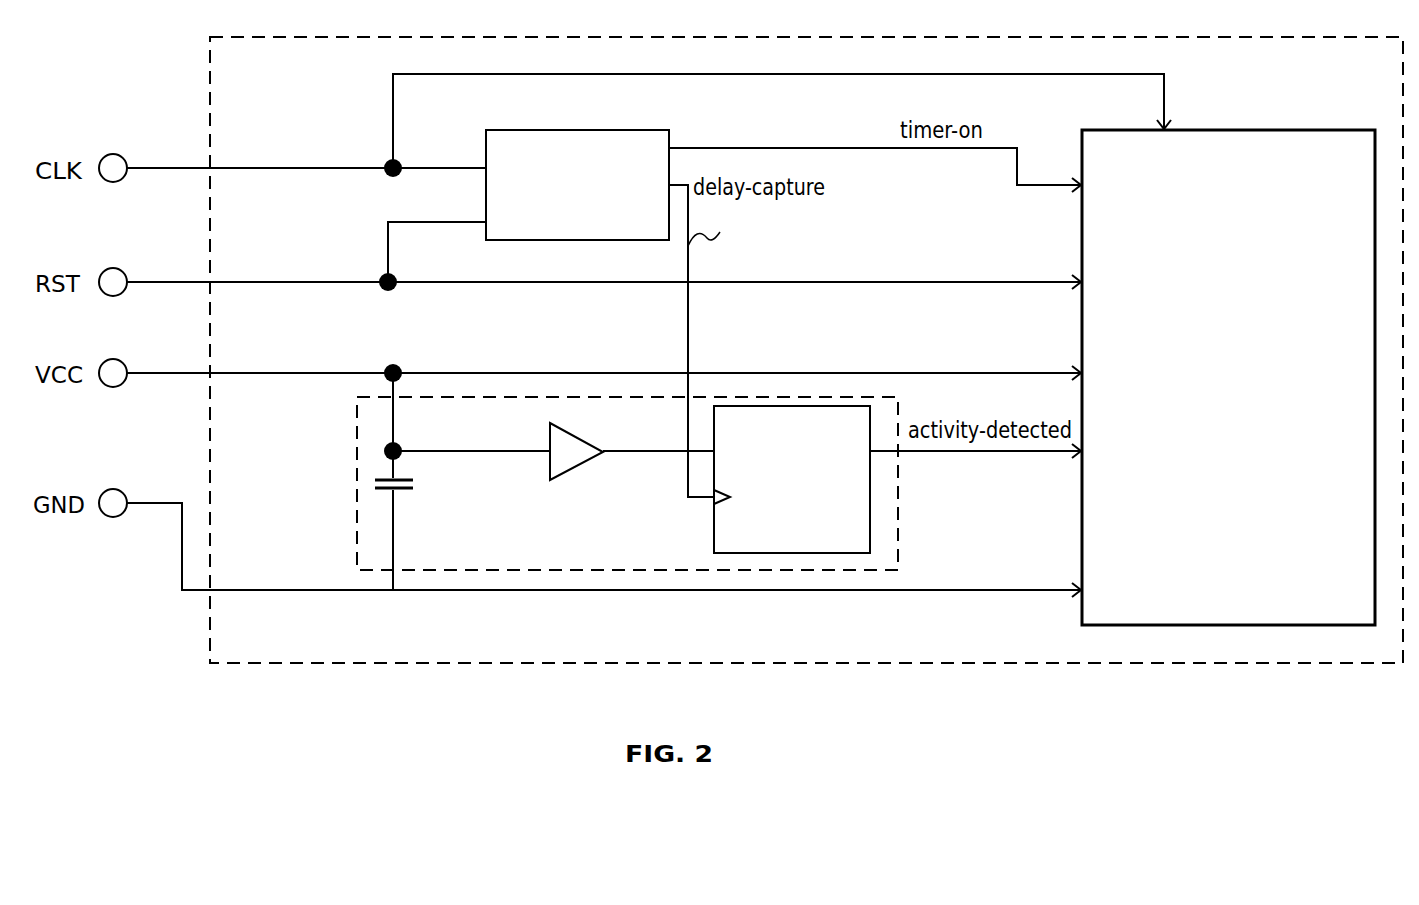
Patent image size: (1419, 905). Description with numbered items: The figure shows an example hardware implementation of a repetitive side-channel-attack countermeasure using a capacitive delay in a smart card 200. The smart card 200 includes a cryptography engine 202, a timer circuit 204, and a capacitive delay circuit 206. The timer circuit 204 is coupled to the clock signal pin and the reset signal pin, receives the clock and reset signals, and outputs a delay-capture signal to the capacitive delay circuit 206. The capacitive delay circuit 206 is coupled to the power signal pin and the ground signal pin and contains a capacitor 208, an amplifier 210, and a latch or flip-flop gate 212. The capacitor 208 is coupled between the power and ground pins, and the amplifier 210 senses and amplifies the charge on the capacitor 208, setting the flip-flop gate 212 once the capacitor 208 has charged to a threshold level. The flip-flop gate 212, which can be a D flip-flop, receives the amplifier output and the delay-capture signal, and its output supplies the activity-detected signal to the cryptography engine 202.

The smart card 200 is at (263, 80).
The cryptography engine 202 is at (1240, 271).
The timer circuit 204 is at (647, 130).
The capacitive delay circuit 206 is at (357, 435).
The capacitor 208 is at (407, 495).
The amplifier 210 is at (577, 470).
The latch or flip-flop gate 212 is at (793, 406).